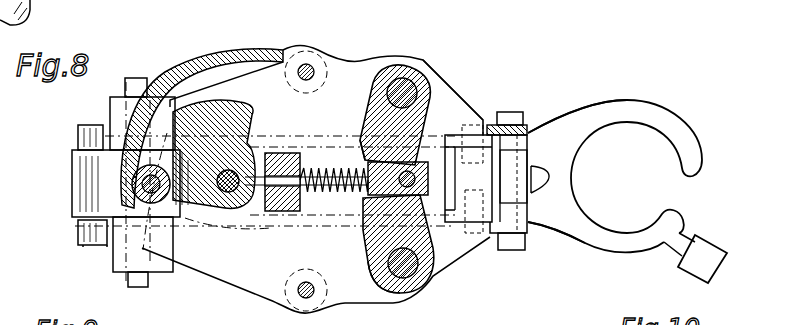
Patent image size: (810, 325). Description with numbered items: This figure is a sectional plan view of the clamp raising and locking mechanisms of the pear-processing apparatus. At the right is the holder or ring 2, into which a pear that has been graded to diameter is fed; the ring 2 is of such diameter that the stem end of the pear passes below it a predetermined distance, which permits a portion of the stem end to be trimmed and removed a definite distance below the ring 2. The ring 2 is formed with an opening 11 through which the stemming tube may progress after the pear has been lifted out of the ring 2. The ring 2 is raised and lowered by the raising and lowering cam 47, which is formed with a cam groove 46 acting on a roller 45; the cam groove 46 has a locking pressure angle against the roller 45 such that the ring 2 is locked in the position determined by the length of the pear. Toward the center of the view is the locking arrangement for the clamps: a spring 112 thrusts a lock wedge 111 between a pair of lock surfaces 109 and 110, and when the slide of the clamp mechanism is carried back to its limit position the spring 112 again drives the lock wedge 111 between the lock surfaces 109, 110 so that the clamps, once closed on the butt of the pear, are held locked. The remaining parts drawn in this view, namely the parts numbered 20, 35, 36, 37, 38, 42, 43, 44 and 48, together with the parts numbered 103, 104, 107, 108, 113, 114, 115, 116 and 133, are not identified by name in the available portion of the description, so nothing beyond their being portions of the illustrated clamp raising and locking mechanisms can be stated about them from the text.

The ring 2 is at (688, 142).
The opening 11 is at (697, 201).
The frame plate 20 is at (478, 110).
The neck of hook 35 is at (512, 214).
The retaining clip 36 is at (536, 187).
The hatched washer 37 is at (522, 127).
The threaded nut 38 is at (78, 143).
The housing block 42 is at (83, 175).
The end tab 43 is at (83, 247).
The pivot pin 44 is at (157, 160).
The roller 45 is at (138, 262).
The cam groove 46 is at (196, 80).
The raising and lowering cam 47 is at (232, 56).
The cam member 48 is at (229, 190).
The lower jaw pivot pin 103 is at (403, 280).
The upper jaw pivot pin 104 is at (403, 87).
The connector block 107 is at (474, 253).
The plate edge 108 is at (428, 118).
The lock surface 109 is at (363, 204).
The lock surface 110 is at (363, 155).
The lock wedge 111 is at (432, 178).
The spring 112 is at (308, 186).
The spring rod 113 is at (322, 206).
The abutment block 114 is at (283, 211).
The lower jaw hole 115 is at (393, 231).
The upper jaw 116 is at (380, 122).
The square head 133 is at (710, 253).